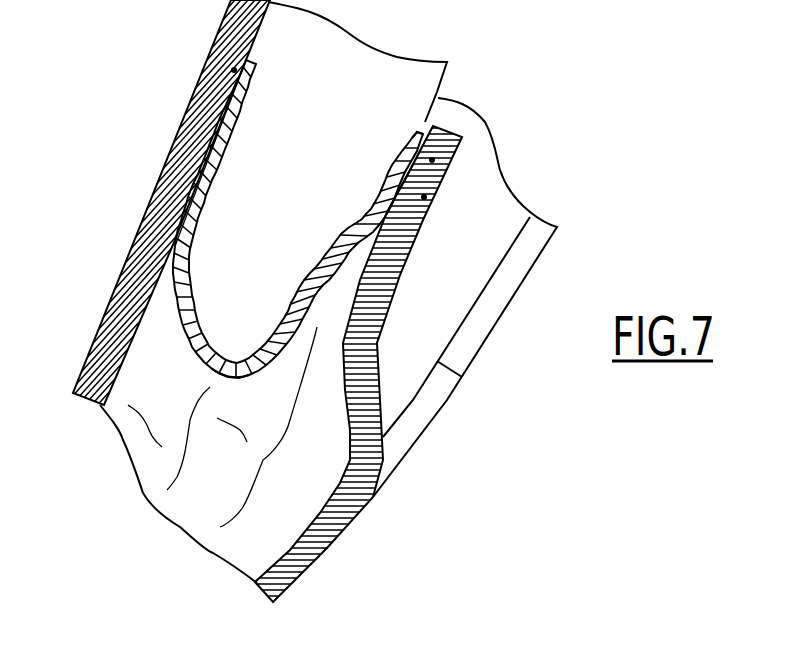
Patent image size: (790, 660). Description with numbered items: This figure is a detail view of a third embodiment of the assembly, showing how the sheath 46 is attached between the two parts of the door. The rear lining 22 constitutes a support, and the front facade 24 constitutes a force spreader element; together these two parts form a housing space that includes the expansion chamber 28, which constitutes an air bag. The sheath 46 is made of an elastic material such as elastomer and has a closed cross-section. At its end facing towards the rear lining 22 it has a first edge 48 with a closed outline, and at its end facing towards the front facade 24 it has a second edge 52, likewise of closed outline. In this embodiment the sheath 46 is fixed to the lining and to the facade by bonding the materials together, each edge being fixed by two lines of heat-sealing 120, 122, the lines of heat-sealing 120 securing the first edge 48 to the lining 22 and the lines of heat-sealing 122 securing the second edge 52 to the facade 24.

The rear lining 22 is at (113, 317).
The first edge 48 is at (257, 61).
The lines of heat-sealing 120 is at (234, 70).
The second edge 52 is at (418, 133).
The front facade 24 is at (327, 548).
The lines of heat-sealing 122 is at (432, 160).
The sheath 46 is at (215, 362).
The expansion chamber 28 is at (140, 495).